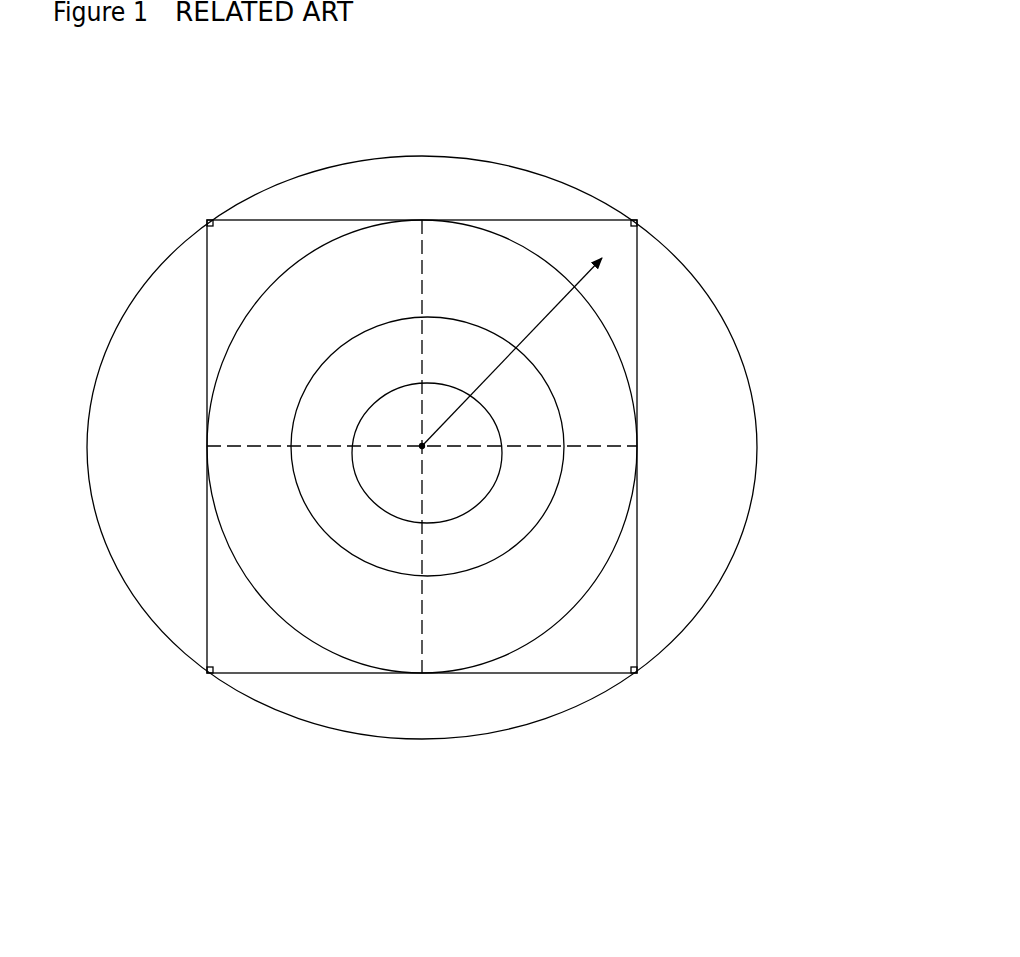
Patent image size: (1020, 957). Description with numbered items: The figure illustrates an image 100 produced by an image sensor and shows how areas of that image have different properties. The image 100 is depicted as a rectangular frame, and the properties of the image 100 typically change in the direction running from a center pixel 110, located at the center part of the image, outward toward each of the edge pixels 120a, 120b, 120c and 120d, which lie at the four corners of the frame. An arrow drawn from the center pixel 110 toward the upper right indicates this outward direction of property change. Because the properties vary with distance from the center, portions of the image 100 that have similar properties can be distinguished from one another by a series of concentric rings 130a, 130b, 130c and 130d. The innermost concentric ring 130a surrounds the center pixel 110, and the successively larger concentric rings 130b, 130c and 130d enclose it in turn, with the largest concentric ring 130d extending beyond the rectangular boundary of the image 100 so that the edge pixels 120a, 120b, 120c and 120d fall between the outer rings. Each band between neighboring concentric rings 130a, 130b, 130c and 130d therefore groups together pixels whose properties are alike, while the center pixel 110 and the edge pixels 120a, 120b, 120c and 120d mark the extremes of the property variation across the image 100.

The image 100 is at (552, 218).
The center pixel 110 is at (422, 446).
The edge pixel 120a is at (182, 203).
The edge pixel 120b is at (659, 208).
The edge pixel 120c is at (180, 688).
The edge pixel 120d is at (664, 689).
The concentric ring 130a is at (492, 490).
The concentric ring 130b is at (563, 477).
The concentric ring 130c is at (634, 373).
The concentric ring 130d is at (728, 323).